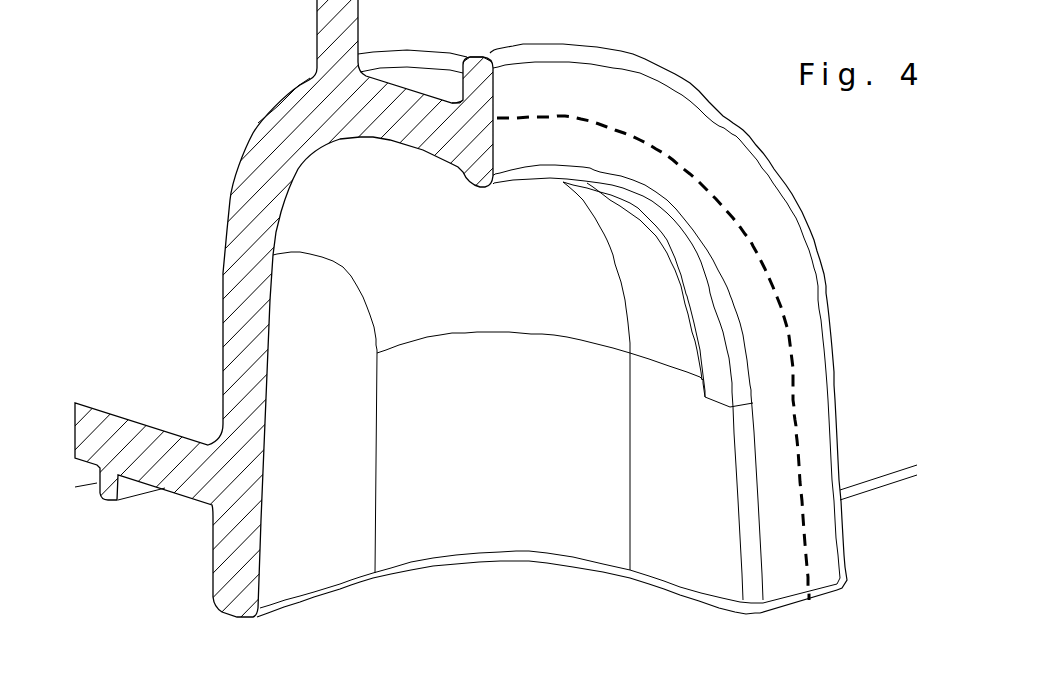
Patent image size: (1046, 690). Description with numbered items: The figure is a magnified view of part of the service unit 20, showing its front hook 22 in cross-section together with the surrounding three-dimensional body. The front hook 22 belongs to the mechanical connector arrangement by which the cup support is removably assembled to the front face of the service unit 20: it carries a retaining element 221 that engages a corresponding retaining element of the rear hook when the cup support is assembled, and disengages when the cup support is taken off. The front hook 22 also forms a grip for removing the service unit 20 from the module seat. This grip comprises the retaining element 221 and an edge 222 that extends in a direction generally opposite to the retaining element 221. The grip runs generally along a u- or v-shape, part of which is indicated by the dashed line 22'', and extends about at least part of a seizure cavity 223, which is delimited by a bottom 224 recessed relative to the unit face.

The service unit 20 is at (180, 113).
The front hook 22 is at (282, 310).
The retaining element 221 is at (475, 90).
The edge 222 is at (482, 182).
The seizure cavity 223 is at (518, 485).
The bottom 224 is at (265, 363).
The v-shape 22'' is at (701, 358).